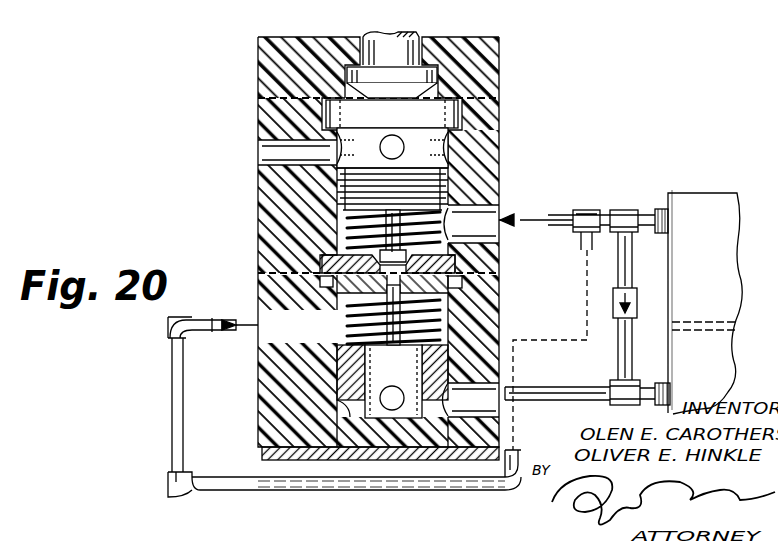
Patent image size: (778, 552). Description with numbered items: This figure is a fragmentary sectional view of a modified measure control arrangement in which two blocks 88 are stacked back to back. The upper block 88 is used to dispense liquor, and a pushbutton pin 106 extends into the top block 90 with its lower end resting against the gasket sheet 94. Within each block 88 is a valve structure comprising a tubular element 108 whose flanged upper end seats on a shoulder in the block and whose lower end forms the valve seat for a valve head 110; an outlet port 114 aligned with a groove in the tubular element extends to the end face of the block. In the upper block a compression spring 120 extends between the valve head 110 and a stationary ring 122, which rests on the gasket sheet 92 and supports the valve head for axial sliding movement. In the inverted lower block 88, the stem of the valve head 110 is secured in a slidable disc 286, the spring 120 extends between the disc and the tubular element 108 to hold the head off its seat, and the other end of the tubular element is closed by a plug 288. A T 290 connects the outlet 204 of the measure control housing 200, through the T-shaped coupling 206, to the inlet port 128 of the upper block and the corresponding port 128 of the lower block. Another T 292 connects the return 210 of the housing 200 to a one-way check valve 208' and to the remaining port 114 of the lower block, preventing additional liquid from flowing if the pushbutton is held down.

The block 88 is at (501, 162).
The top block 90 is at (258, 70).
The gasket sheet 92 is at (258, 273).
The gasket sheet 94 is at (258, 97).
The pin 106 is at (401, 34).
The tubular element 108 is at (337, 392).
The valve head 110 is at (386, 212).
The outlet port 114 is at (258, 158).
The compression spring 120 is at (350, 238).
The ring 122 is at (499, 251).
The inlet port 128 is at (502, 209).
The housing 200 is at (722, 275).
The outlet 204 is at (670, 218).
The T-shaped coupling 206 is at (640, 212).
The check valve 208' is at (664, 334).
The feedback connection 210 is at (666, 392).
The slidable disc 286 is at (499, 285).
The plug 288 is at (375, 462).
The T 290 is at (590, 210).
The T 292 is at (614, 388).